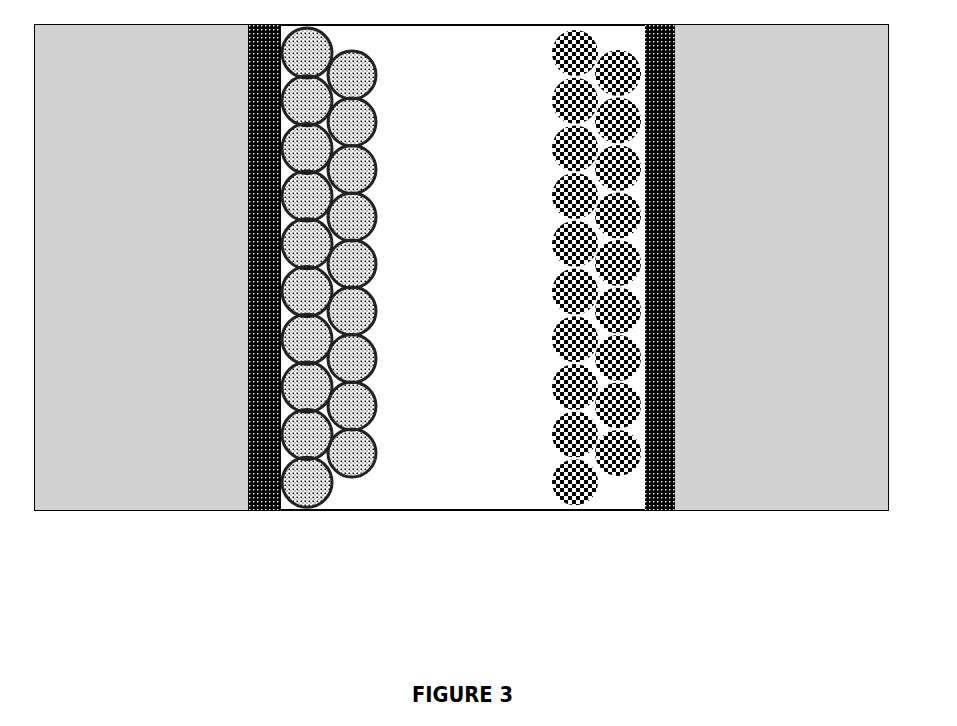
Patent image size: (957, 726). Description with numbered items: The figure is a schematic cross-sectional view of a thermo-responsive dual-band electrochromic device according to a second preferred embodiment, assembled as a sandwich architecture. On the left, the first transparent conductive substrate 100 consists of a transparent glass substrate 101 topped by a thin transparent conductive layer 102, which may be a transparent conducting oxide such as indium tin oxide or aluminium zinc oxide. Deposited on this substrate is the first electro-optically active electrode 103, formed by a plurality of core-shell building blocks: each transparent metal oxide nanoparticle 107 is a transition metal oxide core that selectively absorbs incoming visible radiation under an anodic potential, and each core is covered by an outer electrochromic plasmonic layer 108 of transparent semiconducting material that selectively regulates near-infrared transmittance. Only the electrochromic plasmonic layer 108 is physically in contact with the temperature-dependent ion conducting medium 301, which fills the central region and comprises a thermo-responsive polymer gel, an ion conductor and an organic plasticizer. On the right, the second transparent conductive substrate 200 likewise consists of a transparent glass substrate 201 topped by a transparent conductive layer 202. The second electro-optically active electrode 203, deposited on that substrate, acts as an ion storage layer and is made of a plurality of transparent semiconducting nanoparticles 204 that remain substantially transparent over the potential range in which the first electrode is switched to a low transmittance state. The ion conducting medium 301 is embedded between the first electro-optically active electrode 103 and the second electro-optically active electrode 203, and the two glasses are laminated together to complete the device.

The first transparent conductive substrate 100 is at (241, 333).
The transparent glass substrate 101 is at (160, 430).
The transparent conductive layer 102 is at (262, 510).
The first electro-optically active electrode 103 is at (364, 334).
The transparent metal oxide nanoparticles 107 is at (387, 502).
The electrochromic plasmonic layer 108 is at (360, 470).
The temperature-dependent ion conducting medium 301 is at (473, 425).
The second transparent conductive substrate 200 is at (720, 332).
The transparent glass substrate 201 is at (760, 430).
The transparent conductive layer 202 is at (673, 505).
The second electro-optically active electrode 203 is at (596, 334).
The transparent semiconducting nanoparticles 204 is at (620, 470).